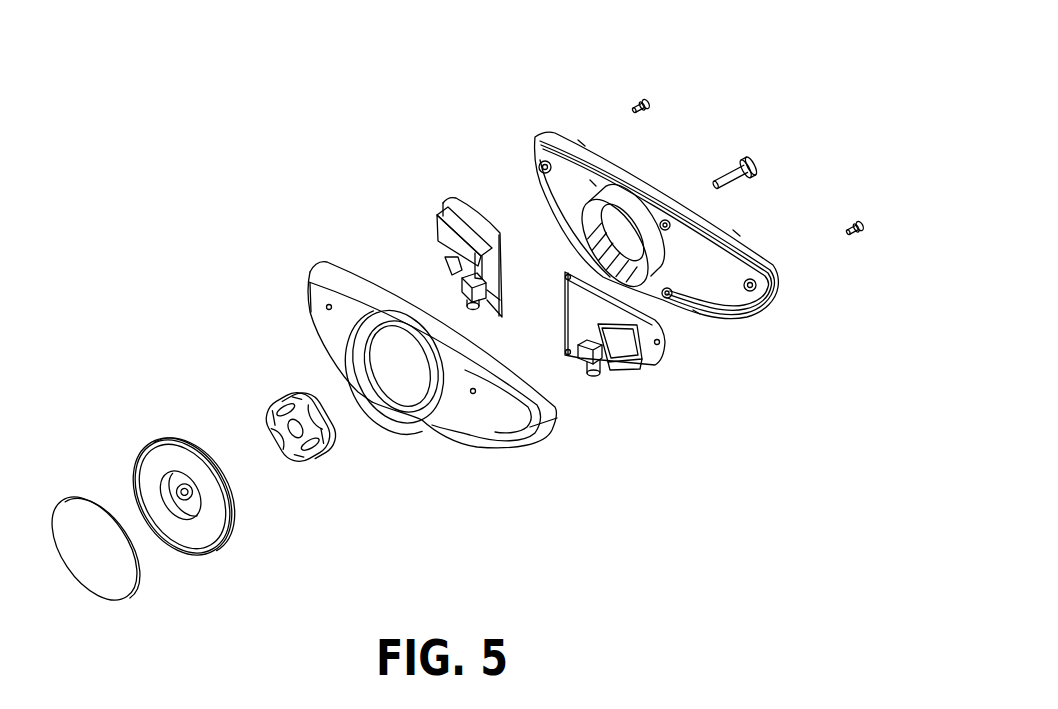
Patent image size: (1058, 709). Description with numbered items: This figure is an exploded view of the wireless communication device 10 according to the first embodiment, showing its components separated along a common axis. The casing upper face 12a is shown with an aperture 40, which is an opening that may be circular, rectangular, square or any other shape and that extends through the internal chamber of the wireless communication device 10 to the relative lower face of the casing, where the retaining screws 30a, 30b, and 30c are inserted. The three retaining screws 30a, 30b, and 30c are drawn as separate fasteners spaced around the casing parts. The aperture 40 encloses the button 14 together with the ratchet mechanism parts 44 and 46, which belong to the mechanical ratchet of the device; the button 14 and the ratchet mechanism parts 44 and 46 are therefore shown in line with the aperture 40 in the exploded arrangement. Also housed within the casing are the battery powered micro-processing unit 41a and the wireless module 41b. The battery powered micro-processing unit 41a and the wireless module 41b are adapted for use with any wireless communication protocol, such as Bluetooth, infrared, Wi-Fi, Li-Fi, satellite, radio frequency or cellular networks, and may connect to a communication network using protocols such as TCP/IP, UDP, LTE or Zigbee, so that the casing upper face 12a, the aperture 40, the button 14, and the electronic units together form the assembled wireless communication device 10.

The wireless communication device 10 is at (828, 37).
The casing upper face 12a is at (307, 300).
The button 14 is at (120, 597).
The retaining screw 30a is at (763, 163).
The retaining screw 30b is at (865, 223).
The retaining screw 30c is at (655, 103).
The aperture 40 is at (582, 227).
The battery powered micro-processing unit 41a is at (652, 364).
The wireless module 41b is at (443, 233).
The ratchet mechanism part 44 is at (227, 527).
The ratchet mechanism part 46 is at (268, 408).